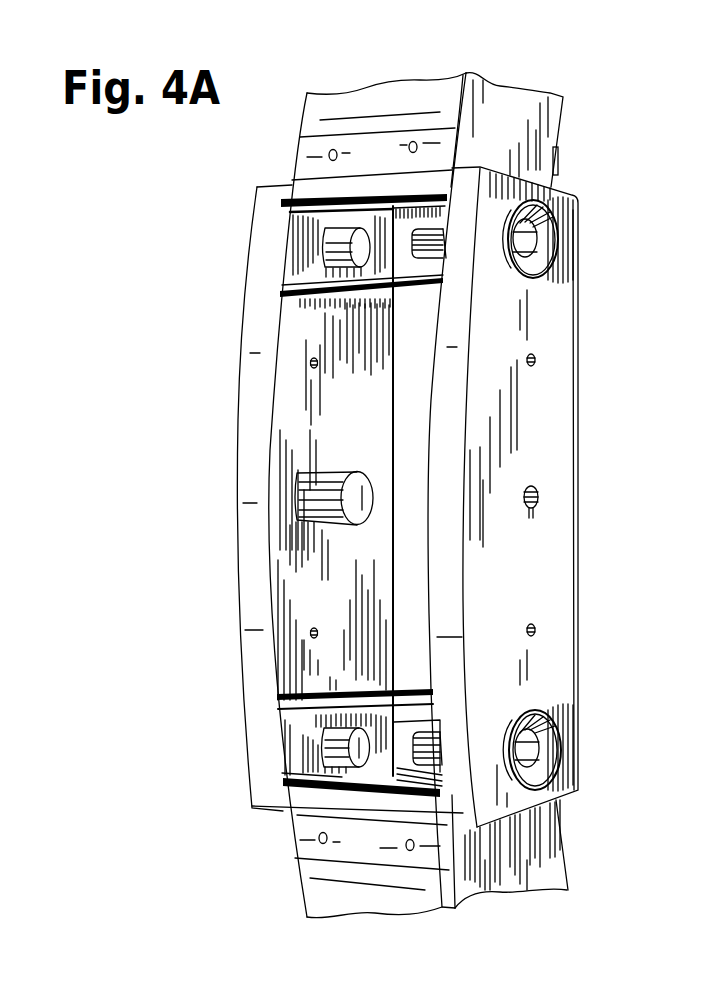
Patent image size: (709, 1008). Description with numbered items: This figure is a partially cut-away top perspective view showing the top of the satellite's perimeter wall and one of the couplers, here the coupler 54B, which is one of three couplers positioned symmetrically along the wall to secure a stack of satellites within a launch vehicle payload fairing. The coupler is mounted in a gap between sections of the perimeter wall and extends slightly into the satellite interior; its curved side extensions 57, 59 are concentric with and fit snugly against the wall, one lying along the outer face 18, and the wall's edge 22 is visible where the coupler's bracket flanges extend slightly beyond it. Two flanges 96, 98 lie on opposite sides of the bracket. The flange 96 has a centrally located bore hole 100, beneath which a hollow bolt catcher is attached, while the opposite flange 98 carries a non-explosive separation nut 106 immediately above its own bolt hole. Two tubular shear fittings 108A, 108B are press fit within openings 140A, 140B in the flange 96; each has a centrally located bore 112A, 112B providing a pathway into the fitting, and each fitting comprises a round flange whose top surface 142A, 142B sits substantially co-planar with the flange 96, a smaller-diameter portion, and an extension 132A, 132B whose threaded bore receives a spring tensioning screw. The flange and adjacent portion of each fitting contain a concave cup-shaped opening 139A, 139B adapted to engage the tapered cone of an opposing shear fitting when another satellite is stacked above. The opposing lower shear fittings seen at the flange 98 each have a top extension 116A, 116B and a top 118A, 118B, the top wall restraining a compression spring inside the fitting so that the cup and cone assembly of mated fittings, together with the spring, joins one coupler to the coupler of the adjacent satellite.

The outer face 18 is at (382, 103).
The edge 22 is at (543, 168).
The coupler 54B is at (616, 415).
The curved side extension 57 is at (380, 170).
The curved side extension 59 is at (373, 860).
The flange 96 is at (538, 572).
The flange 98 is at (252, 563).
The bore hole 100 is at (540, 503).
The non-explosive separation nut 106 is at (305, 486).
The tubular shear fitting 108A is at (502, 207).
The tubular shear fitting 108B is at (507, 820).
The bore 112A is at (534, 230).
The bore 112B is at (533, 755).
The top extension 116A is at (323, 236).
The top extension 116B is at (323, 733).
The top 118A is at (355, 229).
The top 118B is at (320, 727).
The extension 132A is at (426, 232).
The extension 132B is at (425, 737).
The concave opening 139A is at (548, 257).
The concave opening 139B is at (558, 731).
The upper opening 140A is at (515, 222).
The lower opening 140B is at (517, 727).
The top surface 142A is at (558, 284).
The top surface 142B is at (540, 794).